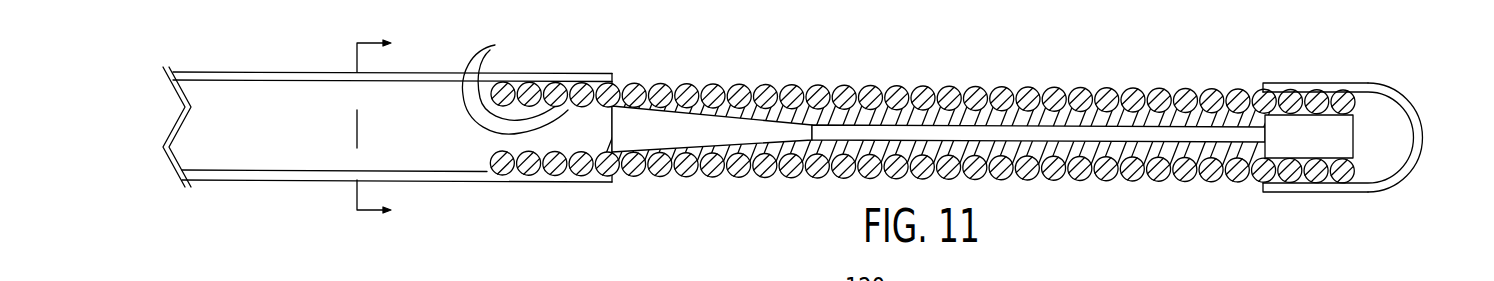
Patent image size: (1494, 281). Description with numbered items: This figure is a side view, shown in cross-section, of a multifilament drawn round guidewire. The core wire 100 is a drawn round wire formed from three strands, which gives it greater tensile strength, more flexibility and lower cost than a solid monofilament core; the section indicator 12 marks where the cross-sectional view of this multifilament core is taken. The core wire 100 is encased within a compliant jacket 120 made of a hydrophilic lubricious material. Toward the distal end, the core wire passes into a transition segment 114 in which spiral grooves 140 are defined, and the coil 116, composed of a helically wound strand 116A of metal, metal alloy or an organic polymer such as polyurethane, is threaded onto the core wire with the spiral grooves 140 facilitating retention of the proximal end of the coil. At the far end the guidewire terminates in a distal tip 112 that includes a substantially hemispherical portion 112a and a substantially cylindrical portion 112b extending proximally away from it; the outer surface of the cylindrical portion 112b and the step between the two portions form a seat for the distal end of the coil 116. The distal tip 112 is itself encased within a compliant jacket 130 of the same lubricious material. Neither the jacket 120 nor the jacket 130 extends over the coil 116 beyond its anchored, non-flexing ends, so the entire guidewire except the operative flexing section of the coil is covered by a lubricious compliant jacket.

The core wire 100 is at (257, 92).
The section line 12- 12 is at (387, 130).
The compliant jacket 120 is at (428, 78).
The spiral grooves 140 is at (515, 76).
The transition segment 114 is at (575, 129).
The coil 116 is at (922, 103).
The helically wound strand 116A is at (1003, 97).
The distal tip 112 is at (989, 148).
The hemispherical portion 112a is at (1375, 119).
The cylindrical portion 112b is at (1300, 138).
The compliant jacket 130 is at (1420, 157).